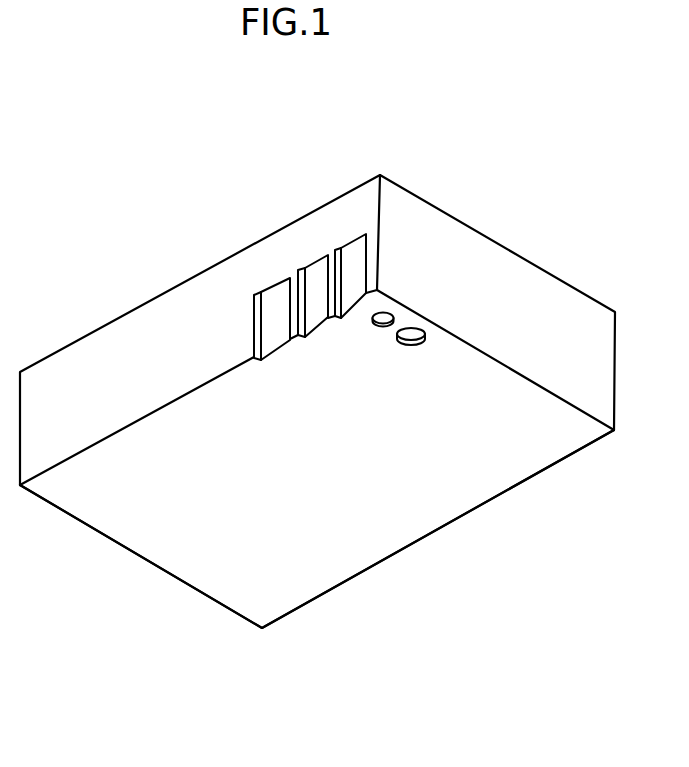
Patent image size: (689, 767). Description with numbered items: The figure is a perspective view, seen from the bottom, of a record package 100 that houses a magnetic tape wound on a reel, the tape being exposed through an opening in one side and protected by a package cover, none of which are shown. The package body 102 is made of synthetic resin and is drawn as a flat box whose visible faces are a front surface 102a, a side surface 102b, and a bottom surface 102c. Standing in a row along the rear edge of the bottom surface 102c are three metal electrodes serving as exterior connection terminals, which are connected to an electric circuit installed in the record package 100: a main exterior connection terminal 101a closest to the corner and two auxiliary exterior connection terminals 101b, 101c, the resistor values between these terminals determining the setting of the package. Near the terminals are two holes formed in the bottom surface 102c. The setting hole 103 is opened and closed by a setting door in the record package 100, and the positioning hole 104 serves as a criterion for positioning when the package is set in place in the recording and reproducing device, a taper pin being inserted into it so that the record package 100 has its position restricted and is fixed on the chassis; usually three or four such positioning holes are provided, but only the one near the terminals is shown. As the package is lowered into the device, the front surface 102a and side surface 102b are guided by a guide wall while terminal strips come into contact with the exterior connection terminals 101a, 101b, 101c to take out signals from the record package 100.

The record package 100 is at (97, 277).
The main exterior connection terminal 101a is at (362, 262).
The auxiliary exterior connection terminal 101b is at (317, 276).
The auxiliary exterior connection terminal 101c is at (276, 296).
The package body 102 is at (317, 509).
The front surface 102a is at (185, 373).
The side surface 102b is at (518, 358).
The bottom surface 102c is at (417, 678).
The setting hole 103 is at (390, 315).
The positioning hole 104 is at (420, 328).